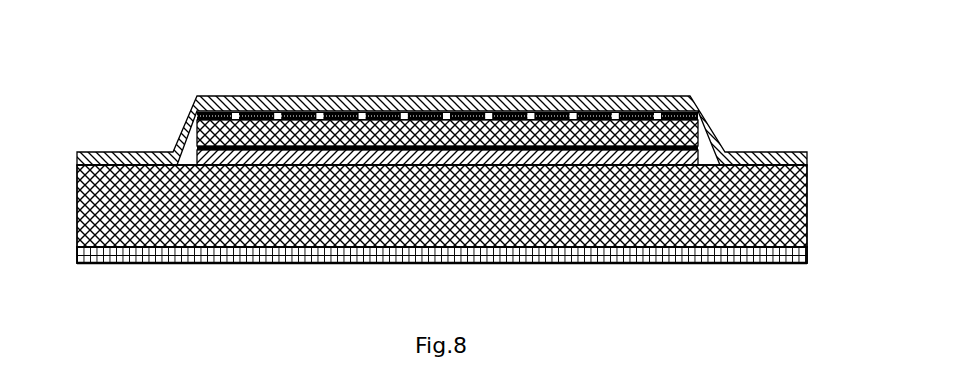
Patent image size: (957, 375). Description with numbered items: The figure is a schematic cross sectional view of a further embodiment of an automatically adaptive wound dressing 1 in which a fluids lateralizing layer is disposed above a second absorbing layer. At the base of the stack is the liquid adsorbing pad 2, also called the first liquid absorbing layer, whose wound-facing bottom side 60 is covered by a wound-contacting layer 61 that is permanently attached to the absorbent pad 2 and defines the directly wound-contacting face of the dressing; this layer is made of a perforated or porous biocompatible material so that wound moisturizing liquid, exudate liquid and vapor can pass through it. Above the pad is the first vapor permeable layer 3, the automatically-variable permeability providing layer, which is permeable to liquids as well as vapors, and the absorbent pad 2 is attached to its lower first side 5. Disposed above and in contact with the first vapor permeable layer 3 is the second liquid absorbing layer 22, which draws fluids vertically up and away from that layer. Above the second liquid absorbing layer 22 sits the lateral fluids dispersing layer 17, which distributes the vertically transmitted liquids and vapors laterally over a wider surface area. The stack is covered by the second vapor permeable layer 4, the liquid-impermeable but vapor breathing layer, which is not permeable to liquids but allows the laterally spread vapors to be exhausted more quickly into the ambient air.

The automatically adaptive wound dressing 1 is at (455, 172).
The liquid adsorbing pad 2 is at (785, 227).
The first vapor permeable layer 3 is at (690, 157).
The second vapor permeable layer 4 is at (807, 152).
The lower first side 5 is at (785, 168).
The lateral fluids dispersing layer 17 is at (383, 117).
The second liquid absorbing layer 22 is at (440, 135).
The wound-facing bottom side 60 is at (77, 247).
The wound-contacting layer 61 is at (102, 263).